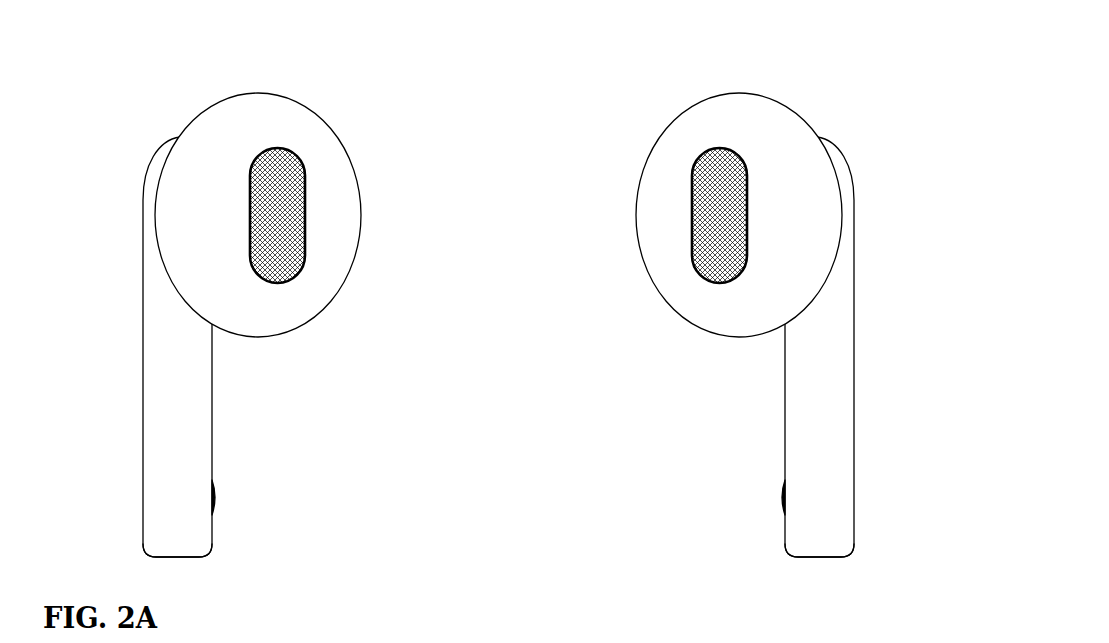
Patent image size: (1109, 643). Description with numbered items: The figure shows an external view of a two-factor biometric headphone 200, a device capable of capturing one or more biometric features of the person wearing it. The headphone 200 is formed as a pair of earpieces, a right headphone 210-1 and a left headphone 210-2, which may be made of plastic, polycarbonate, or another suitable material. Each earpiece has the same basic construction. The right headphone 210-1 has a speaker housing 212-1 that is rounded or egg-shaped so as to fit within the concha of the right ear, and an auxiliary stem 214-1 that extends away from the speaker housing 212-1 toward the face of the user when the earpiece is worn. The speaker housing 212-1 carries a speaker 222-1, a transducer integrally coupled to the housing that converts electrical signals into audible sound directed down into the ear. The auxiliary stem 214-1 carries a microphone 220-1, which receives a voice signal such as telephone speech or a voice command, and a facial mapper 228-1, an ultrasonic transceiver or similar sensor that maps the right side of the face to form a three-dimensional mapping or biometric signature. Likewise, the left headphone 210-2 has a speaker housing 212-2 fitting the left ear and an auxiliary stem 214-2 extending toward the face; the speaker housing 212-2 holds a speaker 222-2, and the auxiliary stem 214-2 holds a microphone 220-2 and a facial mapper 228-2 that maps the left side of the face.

The two-factor biometric headphone (TFBH) 200 is at (886, 36).
The right headphone 210-1 is at (308, 386).
The left headphone 210-2 is at (715, 386).
The speaker housing 212-1 is at (196, 129).
The speaker housing 212-2 is at (801, 129).
The auxiliary stem 214-1 is at (152, 313).
The auxiliary stem 214-2 is at (845, 313).
The microphone 220-1 is at (178, 558).
The microphone 220-2 is at (817, 558).
The speaker 222-1 is at (278, 147).
The speaker 222-2 is at (719, 147).
The facial mapper 228-1 is at (215, 498).
The facial mapper 228-2 is at (783, 501).